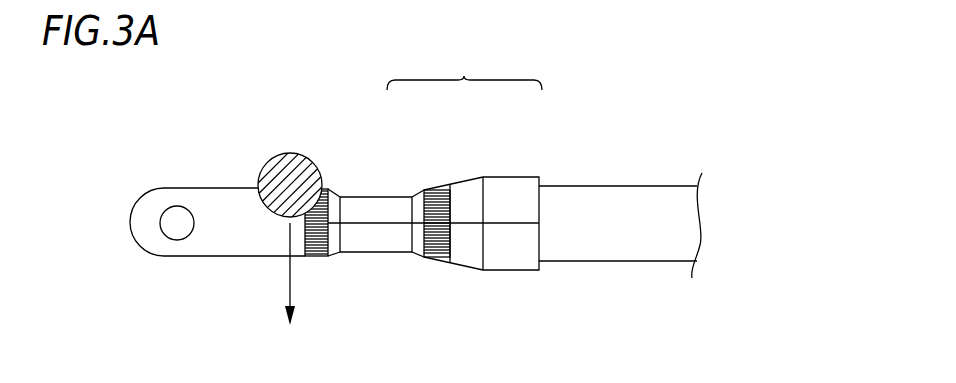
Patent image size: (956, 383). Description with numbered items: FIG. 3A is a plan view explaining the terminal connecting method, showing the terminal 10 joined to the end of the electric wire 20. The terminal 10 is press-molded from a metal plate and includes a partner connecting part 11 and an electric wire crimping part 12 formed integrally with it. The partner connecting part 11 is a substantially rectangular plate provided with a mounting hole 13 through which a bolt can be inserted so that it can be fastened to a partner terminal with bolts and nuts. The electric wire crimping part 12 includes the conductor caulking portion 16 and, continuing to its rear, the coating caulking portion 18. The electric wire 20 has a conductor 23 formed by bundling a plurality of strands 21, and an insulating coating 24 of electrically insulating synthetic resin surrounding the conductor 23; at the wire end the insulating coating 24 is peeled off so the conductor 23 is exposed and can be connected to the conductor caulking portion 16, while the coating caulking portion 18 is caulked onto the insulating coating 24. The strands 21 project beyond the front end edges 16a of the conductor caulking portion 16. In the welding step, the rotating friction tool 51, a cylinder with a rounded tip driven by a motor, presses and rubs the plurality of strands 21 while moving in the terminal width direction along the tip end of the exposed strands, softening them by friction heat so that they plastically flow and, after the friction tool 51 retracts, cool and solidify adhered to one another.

The terminal 10 is at (217, 235).
The partner connecting part 11 is at (217, 213).
The electric wire crimping part 12 is at (464, 77).
The mounting hole 13 is at (182, 229).
The conductor caulking portion 16 is at (427, 172).
The front end edges 16a is at (322, 187).
The coating caulking portion 18 is at (518, 248).
The electric wire 20 is at (620, 215).
The strands 21 is at (319, 258).
The conductor 23 is at (437, 252).
The insulating coating 24 is at (611, 244).
The friction tool 51 is at (277, 163).